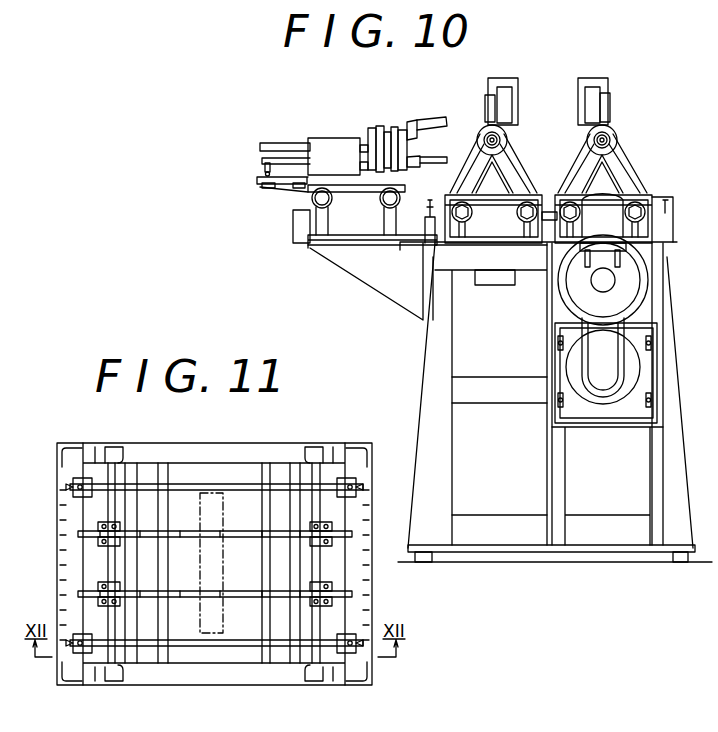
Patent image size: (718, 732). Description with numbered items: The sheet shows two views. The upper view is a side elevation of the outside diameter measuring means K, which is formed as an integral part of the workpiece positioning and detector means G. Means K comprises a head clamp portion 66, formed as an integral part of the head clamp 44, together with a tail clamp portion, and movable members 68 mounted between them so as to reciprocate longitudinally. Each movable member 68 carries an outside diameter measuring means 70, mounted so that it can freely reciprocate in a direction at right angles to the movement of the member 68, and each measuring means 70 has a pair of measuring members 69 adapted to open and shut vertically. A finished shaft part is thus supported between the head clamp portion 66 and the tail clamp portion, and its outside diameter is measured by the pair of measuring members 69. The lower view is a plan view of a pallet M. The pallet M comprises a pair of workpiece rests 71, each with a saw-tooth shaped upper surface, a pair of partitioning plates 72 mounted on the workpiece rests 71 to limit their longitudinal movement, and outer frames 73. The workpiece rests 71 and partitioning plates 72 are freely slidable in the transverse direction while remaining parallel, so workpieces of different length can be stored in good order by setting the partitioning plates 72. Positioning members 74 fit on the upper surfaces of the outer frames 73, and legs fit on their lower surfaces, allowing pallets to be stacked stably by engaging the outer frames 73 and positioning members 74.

In FIG. 10, the outside diameter measuring means 70 is at (396, 122).
In FIG. 10, the measuring members 69 is at (438, 118).
In FIG. 10, the movable members 68 is at (375, 196).
In FIG. 10, the head clamp portion 66 is at (523, 160).
In FIG. 10, the head clamp 44 is at (627, 160).
In FIG. 10, the outside diameter measuring means K is at (505, 74).
In FIG. 10, the workpiece positioning and detector means G is at (608, 80).
In FIG. 11, the outer frames 73 is at (350, 443).
In FIG. 11, the positioning members 74 is at (118, 446).
In FIG. 11, the partitioning plates 72 is at (170, 488).
In FIG. 11, the workpiece rests 71 is at (235, 533).
In FIG. 11, the pallet M is at (222, 443).